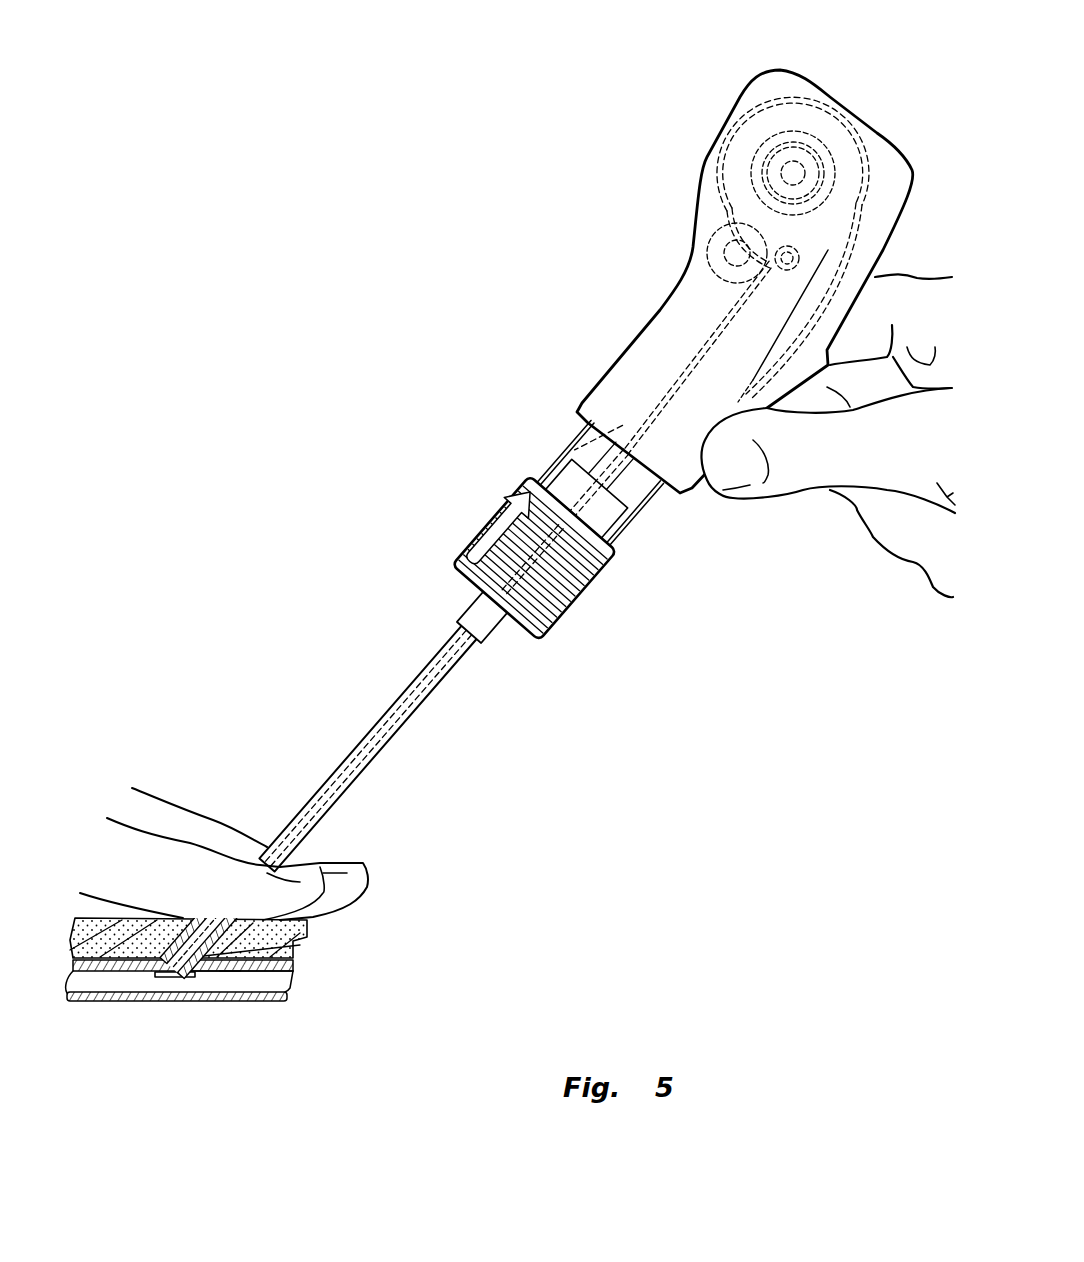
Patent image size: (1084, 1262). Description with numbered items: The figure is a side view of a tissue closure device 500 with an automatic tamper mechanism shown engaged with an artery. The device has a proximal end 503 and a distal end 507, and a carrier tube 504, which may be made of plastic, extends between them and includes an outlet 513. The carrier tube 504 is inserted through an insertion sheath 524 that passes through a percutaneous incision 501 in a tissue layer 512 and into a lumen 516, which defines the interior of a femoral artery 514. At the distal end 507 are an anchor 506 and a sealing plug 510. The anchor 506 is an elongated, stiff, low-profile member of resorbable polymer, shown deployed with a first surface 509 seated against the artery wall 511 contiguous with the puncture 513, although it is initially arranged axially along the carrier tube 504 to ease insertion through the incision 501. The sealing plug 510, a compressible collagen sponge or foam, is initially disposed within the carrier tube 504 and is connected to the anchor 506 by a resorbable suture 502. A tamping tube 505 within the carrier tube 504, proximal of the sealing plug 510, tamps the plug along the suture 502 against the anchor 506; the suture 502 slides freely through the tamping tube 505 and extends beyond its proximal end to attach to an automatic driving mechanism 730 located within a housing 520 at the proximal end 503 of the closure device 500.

The tissue closure device 500 is at (340, 343).
The percutaneous incision 501 is at (180, 937).
The suture 502 is at (367, 767).
The proximal end 503 is at (703, 343).
The carrier tube 504 is at (455, 655).
The tamping tube 505 is at (330, 772).
The anchor 506 is at (163, 973).
The distal end 507 is at (293, 962).
The first surface 509 is at (177, 947).
The sealing plug 510 is at (179, 917).
The artery wall 511 is at (223, 973).
The tissue layer 512 is at (307, 934).
The puncture 513 is at (200, 973).
The femoral artery 514 is at (293, 973).
The lumen 516 is at (277, 985).
The housing 520 is at (907, 157).
The insertion sheath 524 is at (470, 659).
The automatic driving mechanism 730 is at (817, 137).